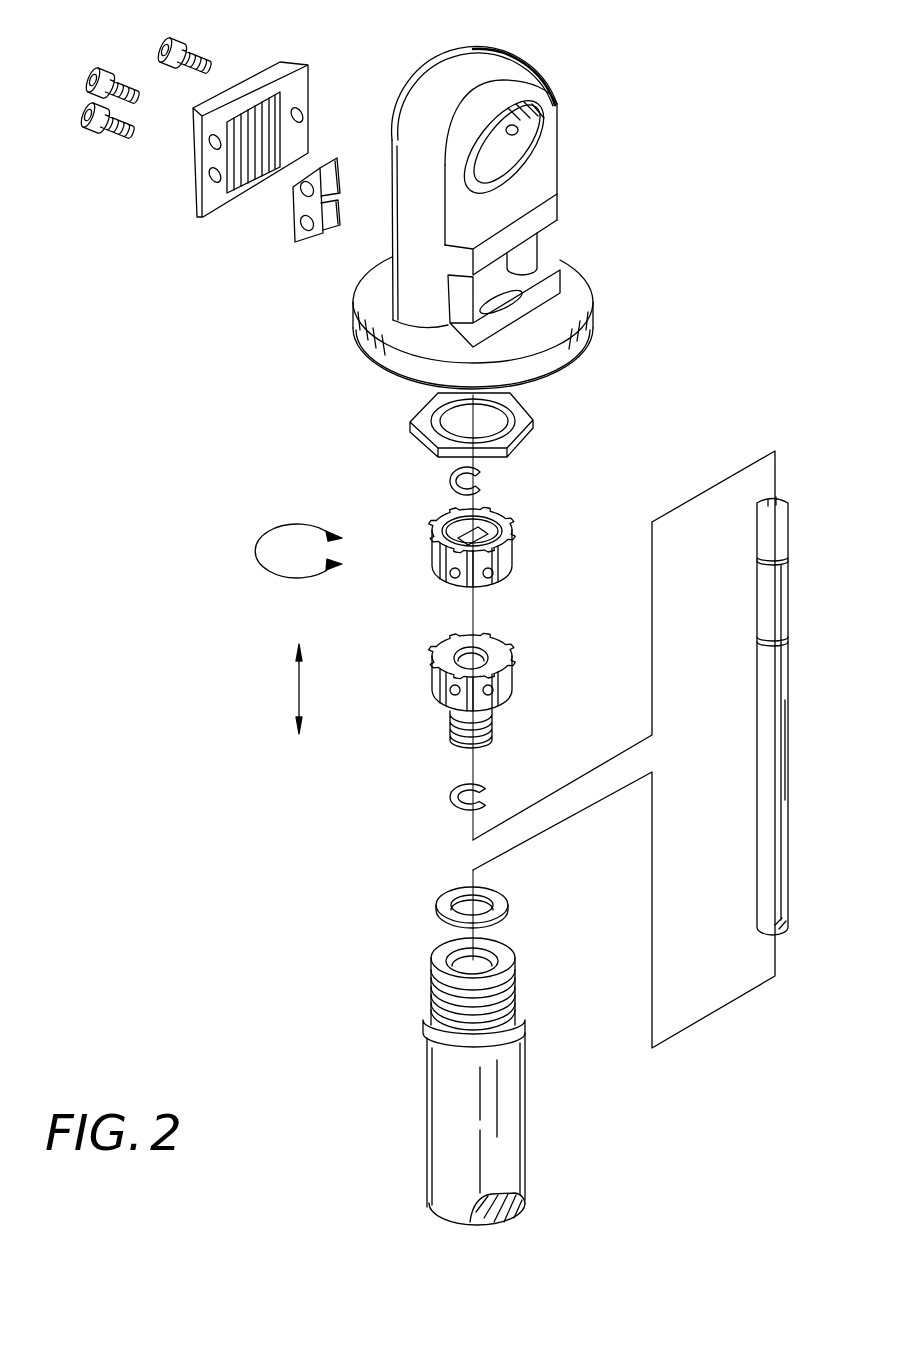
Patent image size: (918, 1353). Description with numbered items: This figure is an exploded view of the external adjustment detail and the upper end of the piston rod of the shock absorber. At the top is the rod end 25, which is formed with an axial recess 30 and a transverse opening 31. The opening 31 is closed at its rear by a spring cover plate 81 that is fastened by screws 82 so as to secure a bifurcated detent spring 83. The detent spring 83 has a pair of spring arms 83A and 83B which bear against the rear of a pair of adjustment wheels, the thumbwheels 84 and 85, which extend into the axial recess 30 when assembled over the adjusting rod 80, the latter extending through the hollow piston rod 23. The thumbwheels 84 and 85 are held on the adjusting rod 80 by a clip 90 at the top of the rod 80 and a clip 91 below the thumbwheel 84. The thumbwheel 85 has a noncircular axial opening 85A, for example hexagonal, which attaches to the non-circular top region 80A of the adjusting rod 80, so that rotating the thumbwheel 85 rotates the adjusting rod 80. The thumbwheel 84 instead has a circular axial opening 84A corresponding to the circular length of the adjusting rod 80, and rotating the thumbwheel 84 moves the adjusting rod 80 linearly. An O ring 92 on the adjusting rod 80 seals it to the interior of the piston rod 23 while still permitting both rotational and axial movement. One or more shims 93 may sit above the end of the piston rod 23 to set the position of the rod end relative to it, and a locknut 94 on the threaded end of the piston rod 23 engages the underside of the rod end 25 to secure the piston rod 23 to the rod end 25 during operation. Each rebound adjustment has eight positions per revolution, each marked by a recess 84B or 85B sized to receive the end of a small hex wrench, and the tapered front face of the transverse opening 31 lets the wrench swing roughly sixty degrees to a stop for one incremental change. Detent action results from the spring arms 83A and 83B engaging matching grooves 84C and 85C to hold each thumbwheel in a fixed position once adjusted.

The piston rod 23 is at (432, 1140).
The rod end 25 is at (506, 218).
The axial recess 30 is at (505, 300).
The transverse opening 31 is at (512, 140).
The adjusting rod 80 is at (822, 712).
The top region of the adjusting rod 80A is at (790, 518).
The spring cover plate 81 is at (277, 62).
The screws 82 is at (83, 112).
The bifurcated detent spring 83 is at (296, 192).
The spring arm 83A is at (338, 177).
The spring arm 83B is at (342, 218).
The thumbwheel 84 is at (478, 681).
The circular axial opening 84A is at (480, 657).
The recess 84B is at (478, 731).
The grooves 84C is at (491, 690).
The thumbwheel 85 is at (488, 557).
The noncircular axial opening 85A is at (482, 534).
The recess 85B is at (513, 577).
The grooves 85C is at (485, 578).
The clip 90 is at (485, 485).
The clip 91 is at (488, 795).
The O ring 92 is at (789, 640).
The shims 93 is at (506, 904).
The locknut 94 is at (532, 417).